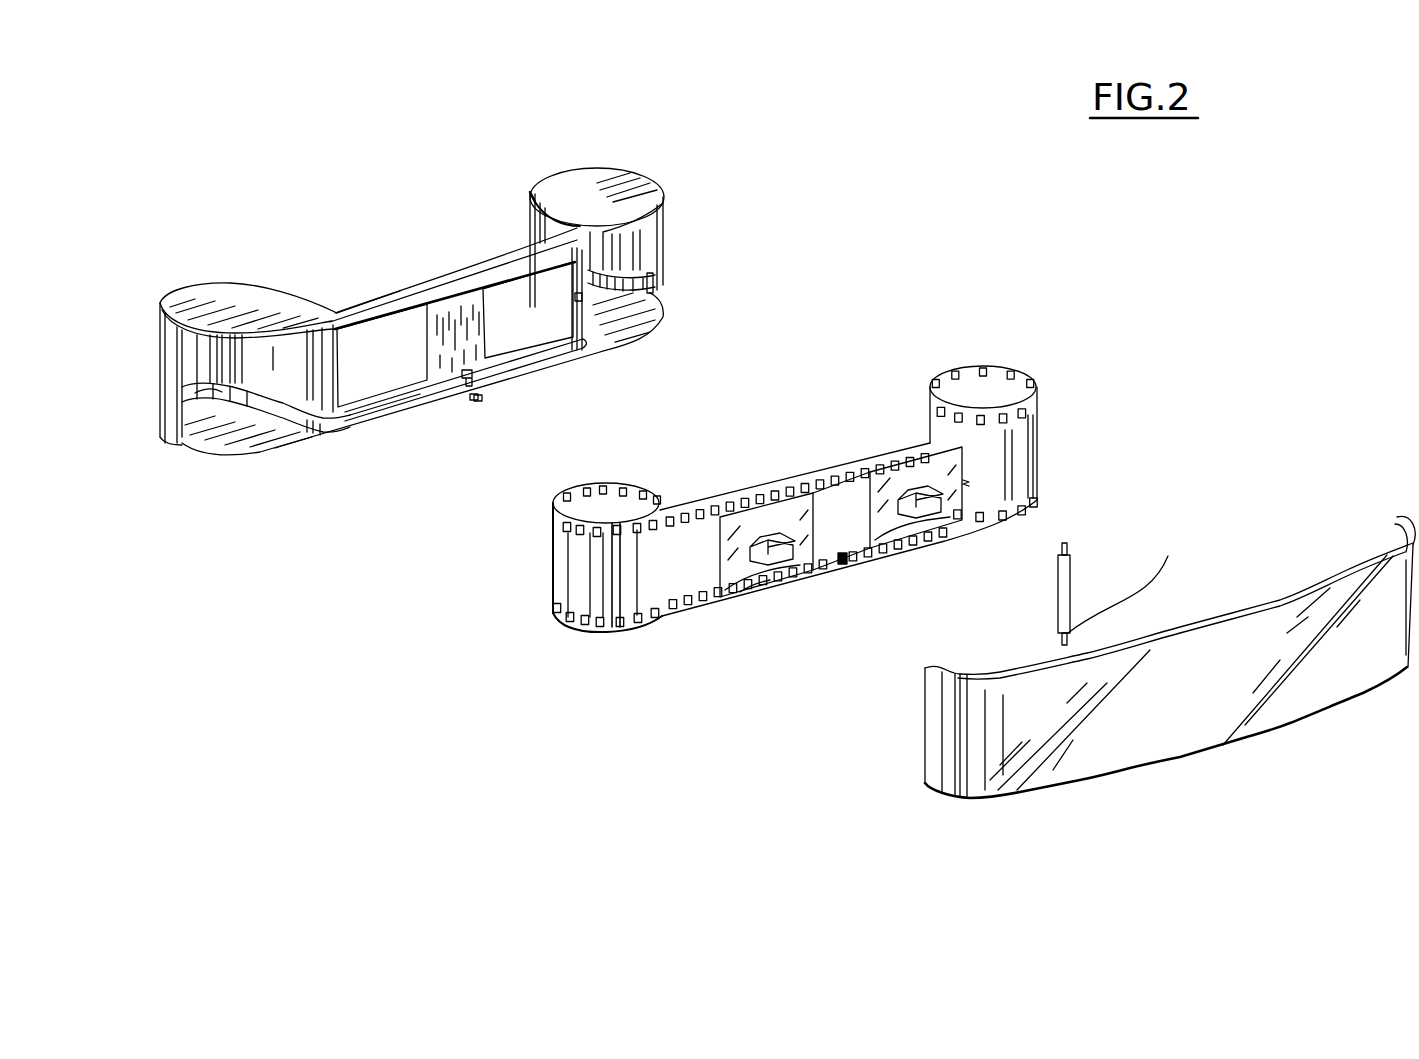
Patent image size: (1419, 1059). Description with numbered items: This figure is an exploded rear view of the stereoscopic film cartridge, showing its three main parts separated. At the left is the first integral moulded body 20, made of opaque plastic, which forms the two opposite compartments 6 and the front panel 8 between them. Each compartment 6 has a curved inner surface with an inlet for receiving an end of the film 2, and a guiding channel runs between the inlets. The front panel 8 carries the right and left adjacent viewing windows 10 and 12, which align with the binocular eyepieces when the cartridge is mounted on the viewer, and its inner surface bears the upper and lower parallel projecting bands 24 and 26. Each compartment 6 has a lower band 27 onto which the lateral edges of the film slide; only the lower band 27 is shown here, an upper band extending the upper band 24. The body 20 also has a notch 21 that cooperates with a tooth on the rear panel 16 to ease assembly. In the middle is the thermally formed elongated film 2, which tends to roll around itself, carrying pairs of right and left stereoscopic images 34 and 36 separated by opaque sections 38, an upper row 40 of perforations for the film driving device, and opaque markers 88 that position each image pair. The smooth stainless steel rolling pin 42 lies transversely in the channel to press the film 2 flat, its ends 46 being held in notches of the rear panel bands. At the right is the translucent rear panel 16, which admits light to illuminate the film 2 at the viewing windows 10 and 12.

The film 2 is at (898, 397).
The compartments 6 is at (617, 252).
The front panel 8 is at (453, 303).
The right viewing window 10 is at (393, 366).
The left viewing window 12 is at (521, 331).
The rear panel 16 is at (1167, 773).
The first integral moulded body 20 is at (527, 163).
The notch 21 is at (474, 398).
The upper projecting band 24 is at (345, 310).
The lower projecting band 26 is at (355, 415).
The lower band 27 is at (640, 288).
The right stereoscopic image 34 is at (900, 523).
The left stereoscopic image 36 is at (753, 577).
The opaque section 38 is at (840, 500).
The upper row of perforations 40 is at (780, 487).
The rolling pin 42 is at (1057, 585).
The ends of the rolling pin 46 is at (1068, 543).
The opaque marker 88 is at (840, 578).